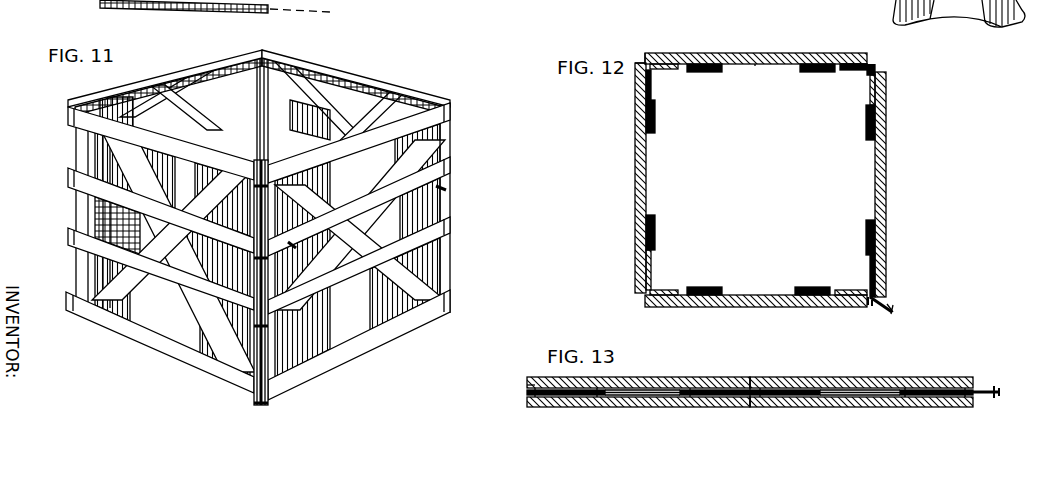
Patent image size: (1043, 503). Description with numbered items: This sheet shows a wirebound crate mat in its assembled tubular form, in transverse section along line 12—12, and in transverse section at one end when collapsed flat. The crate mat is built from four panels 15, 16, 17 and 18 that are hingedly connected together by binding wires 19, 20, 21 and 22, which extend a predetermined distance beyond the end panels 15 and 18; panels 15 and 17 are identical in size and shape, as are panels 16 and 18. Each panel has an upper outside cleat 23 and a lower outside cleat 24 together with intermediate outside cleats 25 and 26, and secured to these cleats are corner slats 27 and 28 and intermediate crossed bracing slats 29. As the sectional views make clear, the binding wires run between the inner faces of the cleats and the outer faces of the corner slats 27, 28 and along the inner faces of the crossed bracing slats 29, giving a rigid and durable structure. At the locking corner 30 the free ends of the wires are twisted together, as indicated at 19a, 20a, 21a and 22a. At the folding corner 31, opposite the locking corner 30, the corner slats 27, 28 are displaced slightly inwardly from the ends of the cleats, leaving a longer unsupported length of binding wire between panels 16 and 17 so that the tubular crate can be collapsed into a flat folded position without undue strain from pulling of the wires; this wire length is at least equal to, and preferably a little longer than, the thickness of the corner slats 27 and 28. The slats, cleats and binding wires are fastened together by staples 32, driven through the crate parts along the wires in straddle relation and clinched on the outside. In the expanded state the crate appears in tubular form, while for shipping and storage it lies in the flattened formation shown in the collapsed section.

In FIG. 11, the section line 12 is at (222, 181).
In FIG. 11, the panel 15 is at (382, 350).
In FIG. 12, the panel 15 is at (887, 172).
In FIG. 13, the panel 15 is at (862, 376).
In FIG. 11, the panel 16 is at (346, 66).
In FIG. 12, the panel 16 is at (770, 52).
In FIG. 13, the panel 16 is at (663, 376).
In FIG. 11, the panel 17 is at (176, 68).
In FIG. 12, the panel 17 is at (634, 160).
In FIG. 13, the panel 17 is at (658, 408).
In FIG. 11, the panel 18 is at (148, 346).
In FIG. 12, the panel 18 is at (752, 308).
In FIG. 13, the panel 18 is at (840, 408).
In FIG. 11, the binding wire 19 is at (365, 90).
In FIG. 12, the binding wire 19 is at (760, 70).
In FIG. 13, the binding wire 19 is at (888, 386).
In FIG. 11, the twisted wire end 19a is at (258, 188).
In FIG. 12, the twisted wire end 19a is at (884, 303).
In FIG. 13, the twisted wire end 19a is at (1000, 391).
In FIG. 11, the binding wire 20 is at (335, 128).
In FIG. 11, the twisted wire end 20a is at (258, 262).
In FIG. 11, the binding wire 21 is at (442, 191).
In FIG. 11, the twisted wire end 21a is at (260, 328).
In FIG. 11, the binding wire 22 is at (292, 246).
In FIG. 11, the twisted wire end 22a is at (259, 406).
In FIG. 11, the upper outside cleat 23 is at (72, 110).
In FIG. 12, the upper outside cleat 23 is at (793, 54).
In FIG. 13, the upper outside cleat 23 is at (758, 378).
In FIG. 11, the lower outside cleat 24 is at (197, 364).
In FIG. 11, the intermediate outside cleat 25 is at (70, 165).
In FIG. 11, the intermediate outside cleat 26 is at (72, 229).
In FIG. 12, the corner slat 27 is at (862, 62).
In FIG. 13, the corner slat 27 is at (720, 378).
In FIG. 12, the corner slat 28 is at (882, 74).
In FIG. 13, the corner slat 28 is at (540, 378).
In FIG. 11, the intermediate crossed bracing slat 29 is at (212, 103).
In FIG. 12, the intermediate crossed bracing slat 29 is at (712, 62).
In FIG. 12, the locking corner 30 is at (868, 310).
In FIG. 13, the locking corner 30 is at (988, 391).
In FIG. 12, the folding corner 31 is at (643, 60).
In FIG. 13, the folding corner 31 is at (527, 386).
In FIG. 11, the staple 32 is at (308, 72).